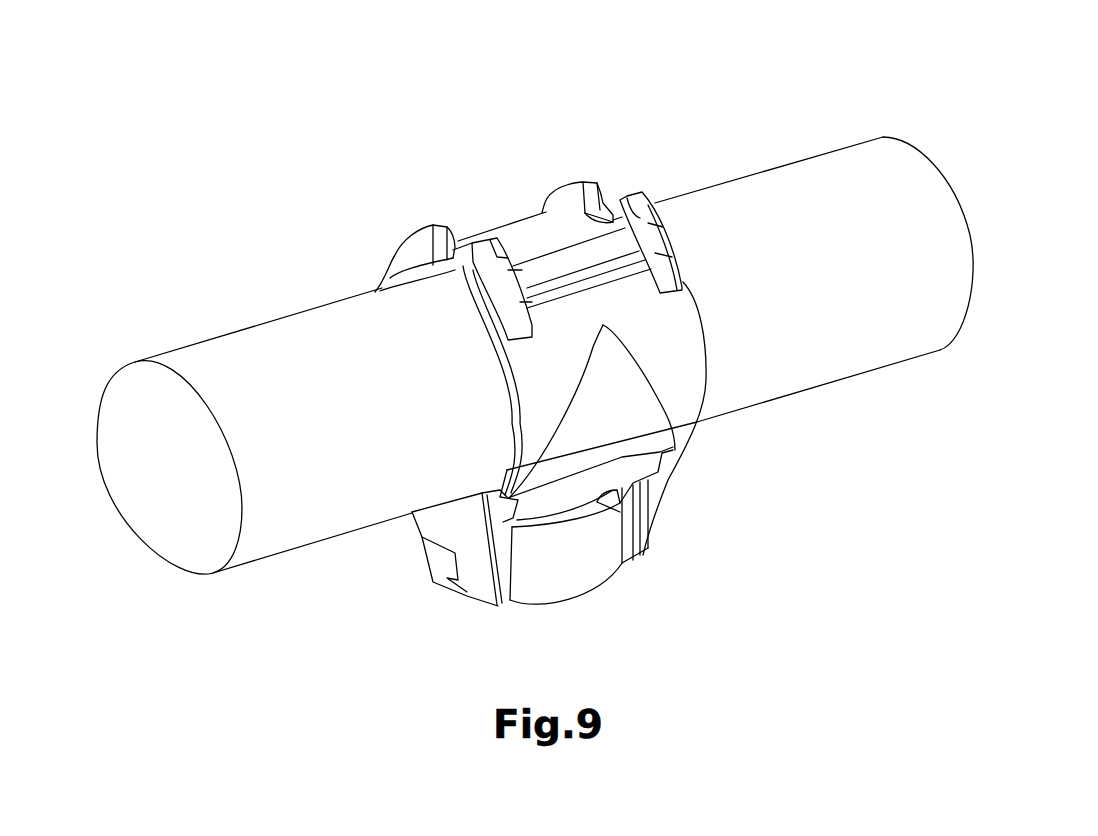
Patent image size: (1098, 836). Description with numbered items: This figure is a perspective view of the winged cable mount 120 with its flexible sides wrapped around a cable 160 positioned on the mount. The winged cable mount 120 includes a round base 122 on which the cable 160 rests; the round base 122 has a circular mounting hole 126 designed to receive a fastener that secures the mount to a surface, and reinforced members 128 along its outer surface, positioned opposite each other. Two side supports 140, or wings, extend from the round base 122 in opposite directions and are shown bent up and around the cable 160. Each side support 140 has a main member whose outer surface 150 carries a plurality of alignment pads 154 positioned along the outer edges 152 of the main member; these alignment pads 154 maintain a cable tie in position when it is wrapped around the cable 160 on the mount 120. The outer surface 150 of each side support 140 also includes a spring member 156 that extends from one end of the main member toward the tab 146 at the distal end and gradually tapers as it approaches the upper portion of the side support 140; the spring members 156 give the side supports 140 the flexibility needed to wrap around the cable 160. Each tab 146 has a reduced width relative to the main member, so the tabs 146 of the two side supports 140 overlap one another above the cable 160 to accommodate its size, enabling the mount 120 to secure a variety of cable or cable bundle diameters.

The winged cable mount 120 is at (277, 260).
The round base 122 is at (580, 577).
The circular mounting hole 126 is at (593, 505).
The reinforced member 128 is at (422, 530).
The side support 140 is at (683, 373).
The tab 146 is at (503, 213).
The outer surface 150 is at (680, 327).
The outer edge 152 is at (692, 292).
The alignment pad 154 is at (628, 193).
The spring member 156 is at (617, 412).
The cable 160 is at (850, 173).